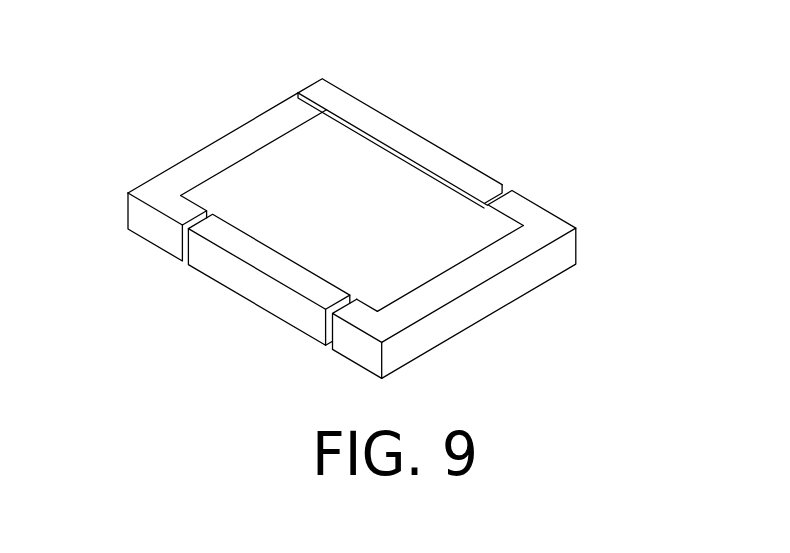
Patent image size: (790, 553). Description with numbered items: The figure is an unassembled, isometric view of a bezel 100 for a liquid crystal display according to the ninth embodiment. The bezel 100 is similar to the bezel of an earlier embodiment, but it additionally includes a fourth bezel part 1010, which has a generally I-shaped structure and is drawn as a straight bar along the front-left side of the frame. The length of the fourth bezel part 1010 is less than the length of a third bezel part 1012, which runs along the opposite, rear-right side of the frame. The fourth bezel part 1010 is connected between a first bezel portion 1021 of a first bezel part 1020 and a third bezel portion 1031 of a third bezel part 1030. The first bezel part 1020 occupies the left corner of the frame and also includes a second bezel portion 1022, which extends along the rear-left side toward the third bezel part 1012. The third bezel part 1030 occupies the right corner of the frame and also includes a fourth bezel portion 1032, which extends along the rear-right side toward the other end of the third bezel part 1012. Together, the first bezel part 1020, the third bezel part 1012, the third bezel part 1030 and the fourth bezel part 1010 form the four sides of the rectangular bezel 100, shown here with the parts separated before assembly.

The bezel 100 is at (278, 70).
The fourth bezel part 1010 is at (283, 299).
The third bezel part 1012 is at (383, 127).
The first bezel part 1020 is at (152, 258).
The first bezel portion 1021 is at (178, 205).
The second bezel portion 1022 is at (210, 160).
The third bezel part 1030 is at (561, 294).
The third bezel portion 1031 is at (358, 346).
The fourth bezel portion 1032 is at (520, 207).